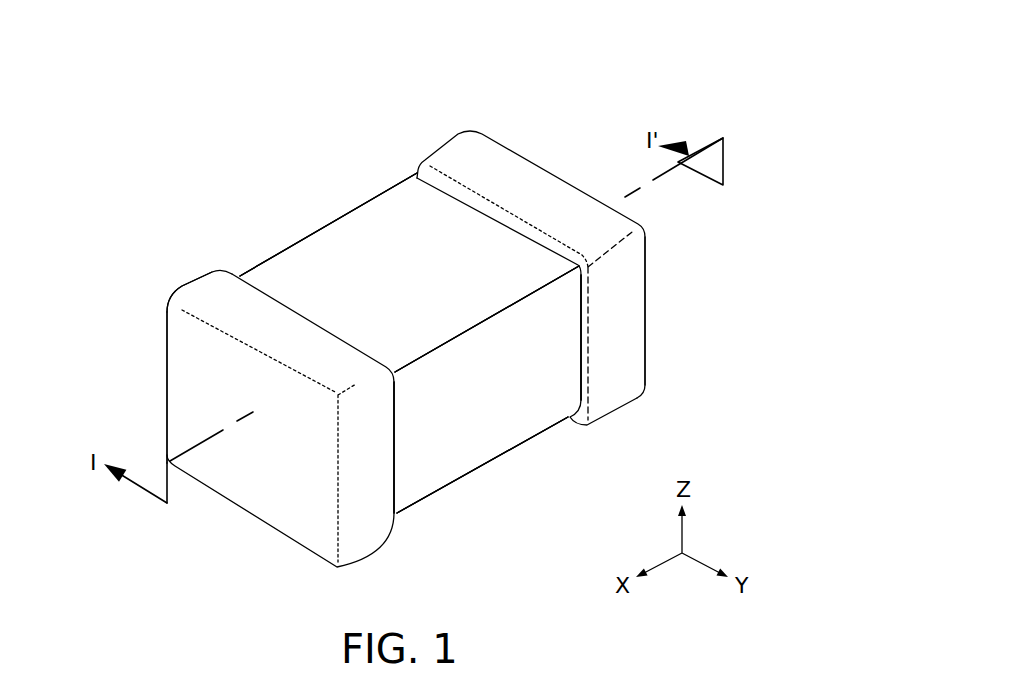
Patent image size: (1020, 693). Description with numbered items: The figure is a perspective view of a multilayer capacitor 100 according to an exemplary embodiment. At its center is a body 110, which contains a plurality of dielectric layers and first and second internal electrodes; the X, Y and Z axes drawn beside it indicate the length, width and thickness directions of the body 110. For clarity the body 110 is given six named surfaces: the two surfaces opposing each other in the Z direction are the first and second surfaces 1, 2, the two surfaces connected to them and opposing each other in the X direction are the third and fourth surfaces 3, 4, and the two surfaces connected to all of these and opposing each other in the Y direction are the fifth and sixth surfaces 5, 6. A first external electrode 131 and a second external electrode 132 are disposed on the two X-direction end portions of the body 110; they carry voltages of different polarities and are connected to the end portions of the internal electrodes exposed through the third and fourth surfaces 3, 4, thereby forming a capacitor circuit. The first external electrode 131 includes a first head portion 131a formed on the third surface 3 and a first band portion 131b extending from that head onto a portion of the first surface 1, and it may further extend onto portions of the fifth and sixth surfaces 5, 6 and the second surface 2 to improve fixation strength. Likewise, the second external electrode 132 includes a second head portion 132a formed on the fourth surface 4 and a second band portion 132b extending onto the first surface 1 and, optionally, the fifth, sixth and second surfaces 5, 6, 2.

The multilayer capacitor 100 is at (290, 43).
The body 110 is at (347, 230).
The first external electrode 131 is at (237, 379).
The first head portion 131a is at (183, 377).
The first band portion 131b is at (203, 295).
The second external electrode 132 is at (516, 220).
The second head portion 132a is at (518, 147).
The second band portion 132b is at (517, 250).
The first surface 1 is at (434, 457).
The second surface 2 is at (392, 200).
The third surface 3 is at (232, 488).
The fourth surface 4 is at (620, 315).
The fifth surface 5 is at (511, 430).
The sixth surface 6 is at (320, 267).